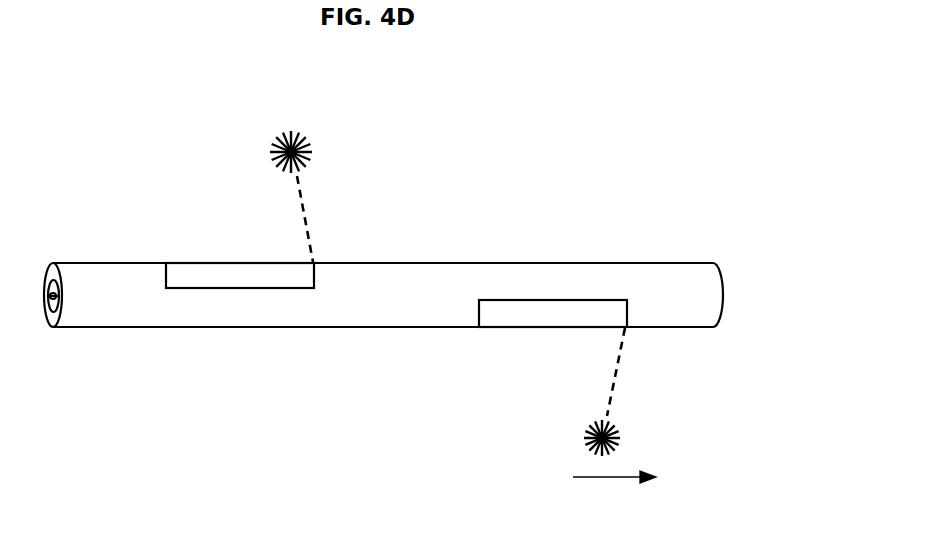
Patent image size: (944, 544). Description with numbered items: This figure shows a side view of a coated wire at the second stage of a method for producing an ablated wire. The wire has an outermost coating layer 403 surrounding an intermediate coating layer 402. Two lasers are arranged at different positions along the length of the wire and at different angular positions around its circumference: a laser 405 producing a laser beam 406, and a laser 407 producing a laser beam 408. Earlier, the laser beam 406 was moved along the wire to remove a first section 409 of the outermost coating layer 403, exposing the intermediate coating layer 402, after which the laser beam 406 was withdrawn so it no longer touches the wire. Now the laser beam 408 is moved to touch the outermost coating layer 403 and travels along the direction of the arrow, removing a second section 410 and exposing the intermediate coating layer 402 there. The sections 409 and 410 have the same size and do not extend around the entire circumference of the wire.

The outermost coating layer 403 is at (643, 275).
The first section 409 is at (218, 288).
The intermediate coating layer 402 is at (585, 316).
The second section 410 is at (503, 328).
The laser 405 is at (268, 145).
The laser beam 406 is at (308, 223).
The laser 407 is at (582, 440).
The laser beam 408 is at (608, 385).